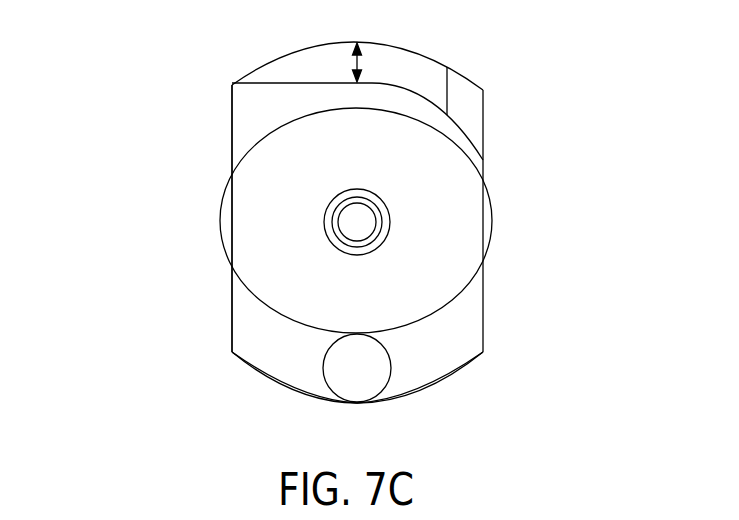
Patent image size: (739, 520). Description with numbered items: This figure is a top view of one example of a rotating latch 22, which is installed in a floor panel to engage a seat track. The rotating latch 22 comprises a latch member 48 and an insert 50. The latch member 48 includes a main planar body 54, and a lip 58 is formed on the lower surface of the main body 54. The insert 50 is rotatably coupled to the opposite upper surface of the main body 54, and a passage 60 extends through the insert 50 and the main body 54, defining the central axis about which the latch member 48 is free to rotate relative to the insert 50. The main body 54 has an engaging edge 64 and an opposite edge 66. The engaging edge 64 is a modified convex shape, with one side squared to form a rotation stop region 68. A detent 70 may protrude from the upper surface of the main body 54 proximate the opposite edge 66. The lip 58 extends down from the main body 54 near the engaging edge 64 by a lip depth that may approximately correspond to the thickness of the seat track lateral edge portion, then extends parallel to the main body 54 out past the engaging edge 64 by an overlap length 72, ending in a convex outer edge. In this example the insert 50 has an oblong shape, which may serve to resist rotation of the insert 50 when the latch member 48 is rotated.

The rotating latch 22 is at (106, 224).
The latch member 48 is at (500, 362).
The insert 50 is at (504, 225).
The main planar body 54 is at (473, 315).
The lip 58 is at (428, 67).
The passage 60 is at (347, 212).
The engaging edge 64 is at (301, 72).
The opposite edge 66 is at (245, 385).
The rotation stop region 68 is at (240, 100).
The detent 70 is at (348, 390).
The overlap length 72 is at (360, 62).